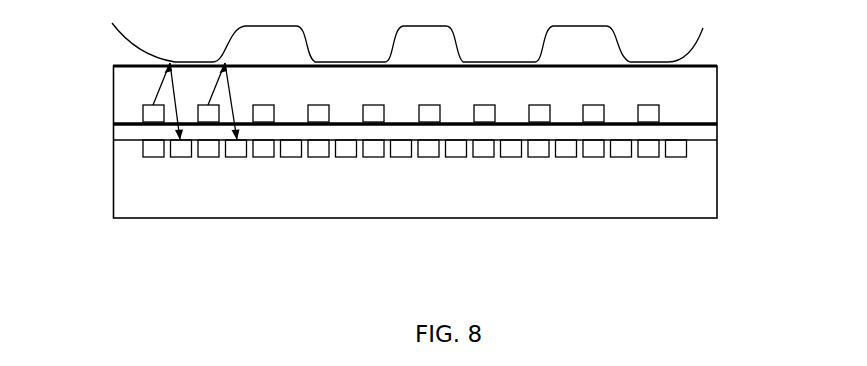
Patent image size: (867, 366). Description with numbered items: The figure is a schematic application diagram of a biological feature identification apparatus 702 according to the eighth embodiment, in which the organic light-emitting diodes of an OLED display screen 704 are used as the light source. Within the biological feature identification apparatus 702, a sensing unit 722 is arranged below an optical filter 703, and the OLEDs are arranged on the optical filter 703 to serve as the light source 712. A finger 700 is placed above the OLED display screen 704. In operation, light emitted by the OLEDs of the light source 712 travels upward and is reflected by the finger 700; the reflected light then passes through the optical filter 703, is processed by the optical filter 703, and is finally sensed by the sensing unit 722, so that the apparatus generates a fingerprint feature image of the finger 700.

The finger 700 is at (125, 43).
The biological feature identification apparatus 702 is at (335, 206).
The optical filter 703 is at (717, 133).
The OLED display screen 704 is at (717, 110).
The light source 712 is at (143, 110).
The sensing unit 722 is at (677, 147).